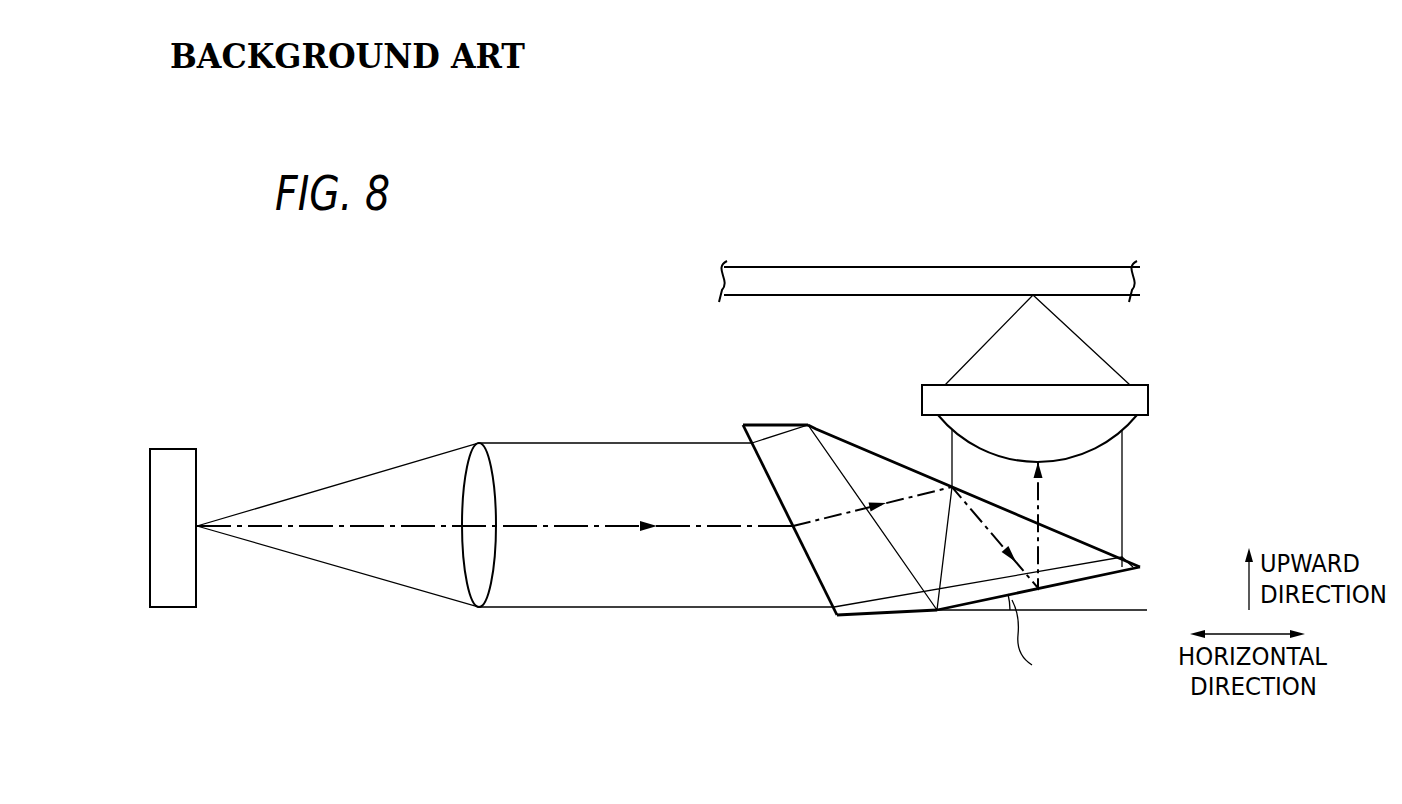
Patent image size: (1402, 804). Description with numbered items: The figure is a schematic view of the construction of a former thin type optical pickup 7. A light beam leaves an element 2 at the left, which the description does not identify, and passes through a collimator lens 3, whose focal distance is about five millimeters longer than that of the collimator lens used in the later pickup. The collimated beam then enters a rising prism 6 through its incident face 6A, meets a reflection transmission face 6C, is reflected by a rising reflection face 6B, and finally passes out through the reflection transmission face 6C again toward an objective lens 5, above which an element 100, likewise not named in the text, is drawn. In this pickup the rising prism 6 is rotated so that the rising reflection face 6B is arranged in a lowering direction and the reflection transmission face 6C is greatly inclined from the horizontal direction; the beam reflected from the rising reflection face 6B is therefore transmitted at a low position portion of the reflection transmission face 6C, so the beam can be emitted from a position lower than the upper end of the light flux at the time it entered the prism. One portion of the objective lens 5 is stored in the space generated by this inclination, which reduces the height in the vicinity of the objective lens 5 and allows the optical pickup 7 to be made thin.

The light source 2 is at (175, 449).
The collimator lens 3 is at (478, 442).
The objective lens 5 is at (922, 388).
The rising prism 6 is at (970, 543).
The incident face 6A is at (822, 583).
The rising reflection face 6B is at (1097, 577).
The reflection transmission face 6C is at (908, 468).
The optical pickup 7 is at (970, 418).
The optical disc 100 is at (790, 267).